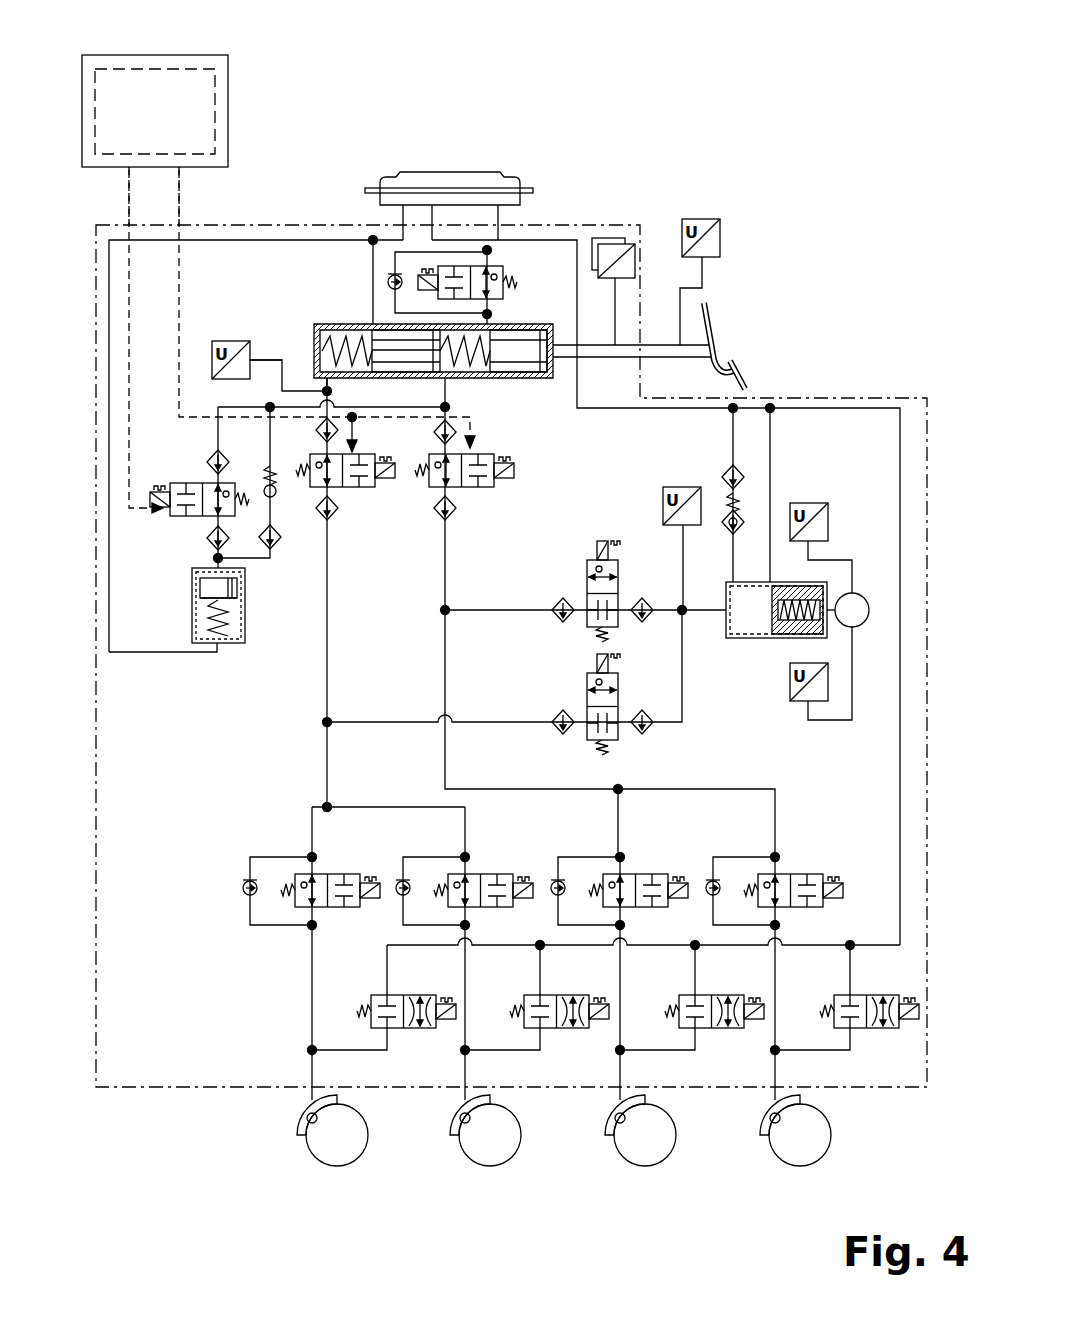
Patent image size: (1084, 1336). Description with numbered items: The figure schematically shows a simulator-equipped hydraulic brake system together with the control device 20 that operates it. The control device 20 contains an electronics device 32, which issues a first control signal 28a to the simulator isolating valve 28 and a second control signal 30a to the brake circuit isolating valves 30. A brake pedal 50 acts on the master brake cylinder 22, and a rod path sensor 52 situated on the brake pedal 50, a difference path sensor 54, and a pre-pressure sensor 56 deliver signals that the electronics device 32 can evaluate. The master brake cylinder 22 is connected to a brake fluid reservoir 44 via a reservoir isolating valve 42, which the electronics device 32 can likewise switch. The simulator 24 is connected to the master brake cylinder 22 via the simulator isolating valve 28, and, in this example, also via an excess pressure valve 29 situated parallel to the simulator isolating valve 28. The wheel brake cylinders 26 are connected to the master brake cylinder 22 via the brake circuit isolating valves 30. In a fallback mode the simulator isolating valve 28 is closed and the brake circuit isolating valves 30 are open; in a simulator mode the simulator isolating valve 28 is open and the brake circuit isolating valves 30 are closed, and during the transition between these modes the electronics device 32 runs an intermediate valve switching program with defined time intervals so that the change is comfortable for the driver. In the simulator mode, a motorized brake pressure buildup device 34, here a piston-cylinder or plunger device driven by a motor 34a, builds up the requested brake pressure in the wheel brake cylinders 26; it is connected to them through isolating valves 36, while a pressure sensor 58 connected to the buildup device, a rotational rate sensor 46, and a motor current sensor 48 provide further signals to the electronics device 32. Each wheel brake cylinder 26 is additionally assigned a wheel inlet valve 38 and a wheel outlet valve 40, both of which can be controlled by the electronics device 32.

The control device 20 is at (178, 55).
The electronics device 32 is at (137, 69).
The second control signal 30a is at (129, 208).
The first control signal 28a is at (179, 208).
The brake fluid reservoir 44 is at (452, 181).
The reservoir isolating valve 42 is at (506, 292).
The master brake cylinder 22 is at (530, 380).
The pre-pressure sensor 56 is at (230, 341).
The difference path sensor 54 is at (608, 238).
The rod path sensor 52 is at (721, 233).
The brake pedal 50 is at (716, 312).
The brake circuit isolating valve 30 is at (366, 489).
The simulator isolating valve 28 is at (200, 483).
The excess pressure valve 29 is at (277, 500).
The simulator 24 is at (248, 633).
The pressure sensor 58 is at (684, 487).
The rotational rate sensor 46 is at (810, 503).
The motor current sensor 48 is at (797, 703).
The isolating valve 36 is at (586, 568).
The motorized brake pressure buildup device 34 is at (751, 668).
The motor 34a is at (862, 627).
The wheel inlet valve 38 is at (322, 873).
The wheel outlet valve 40 is at (404, 1030).
The wheel brake cylinder 26 is at (368, 1143).